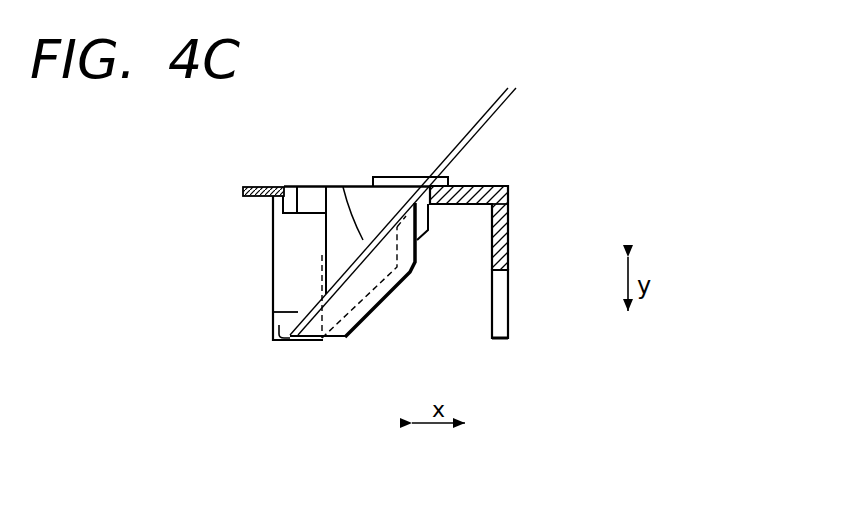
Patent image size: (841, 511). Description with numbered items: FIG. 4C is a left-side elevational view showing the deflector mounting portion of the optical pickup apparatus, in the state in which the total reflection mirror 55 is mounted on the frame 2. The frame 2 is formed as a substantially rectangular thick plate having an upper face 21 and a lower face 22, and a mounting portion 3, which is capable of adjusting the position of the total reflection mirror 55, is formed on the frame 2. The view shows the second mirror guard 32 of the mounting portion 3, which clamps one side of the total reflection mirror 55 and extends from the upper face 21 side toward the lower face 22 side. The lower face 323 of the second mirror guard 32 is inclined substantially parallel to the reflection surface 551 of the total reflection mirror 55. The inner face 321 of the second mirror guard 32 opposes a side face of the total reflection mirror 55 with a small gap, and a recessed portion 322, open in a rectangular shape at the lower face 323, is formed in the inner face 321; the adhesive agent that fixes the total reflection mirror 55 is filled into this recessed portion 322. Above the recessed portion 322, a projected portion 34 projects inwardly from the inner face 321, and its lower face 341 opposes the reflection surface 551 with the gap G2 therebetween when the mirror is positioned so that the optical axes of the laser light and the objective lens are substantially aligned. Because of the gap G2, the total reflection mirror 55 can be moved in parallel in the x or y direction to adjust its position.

The frame 2 is at (502, 278).
The mounting portion 3 is at (460, 229).
The upper face 21 is at (252, 181).
The lower face 22 is at (252, 349).
The second mirror guard 32 is at (403, 177).
The inner face 321 is at (403, 177).
The recessed portion 322 is at (390, 302).
The lower face 323 is at (410, 258).
The projected portion 34 is at (362, 187).
The lower face 341 is at (343, 187).
The total reflection mirror 55 is at (370, 314).
The reflection surface 551 is at (283, 343).
The gap G2 is at (547, 133).